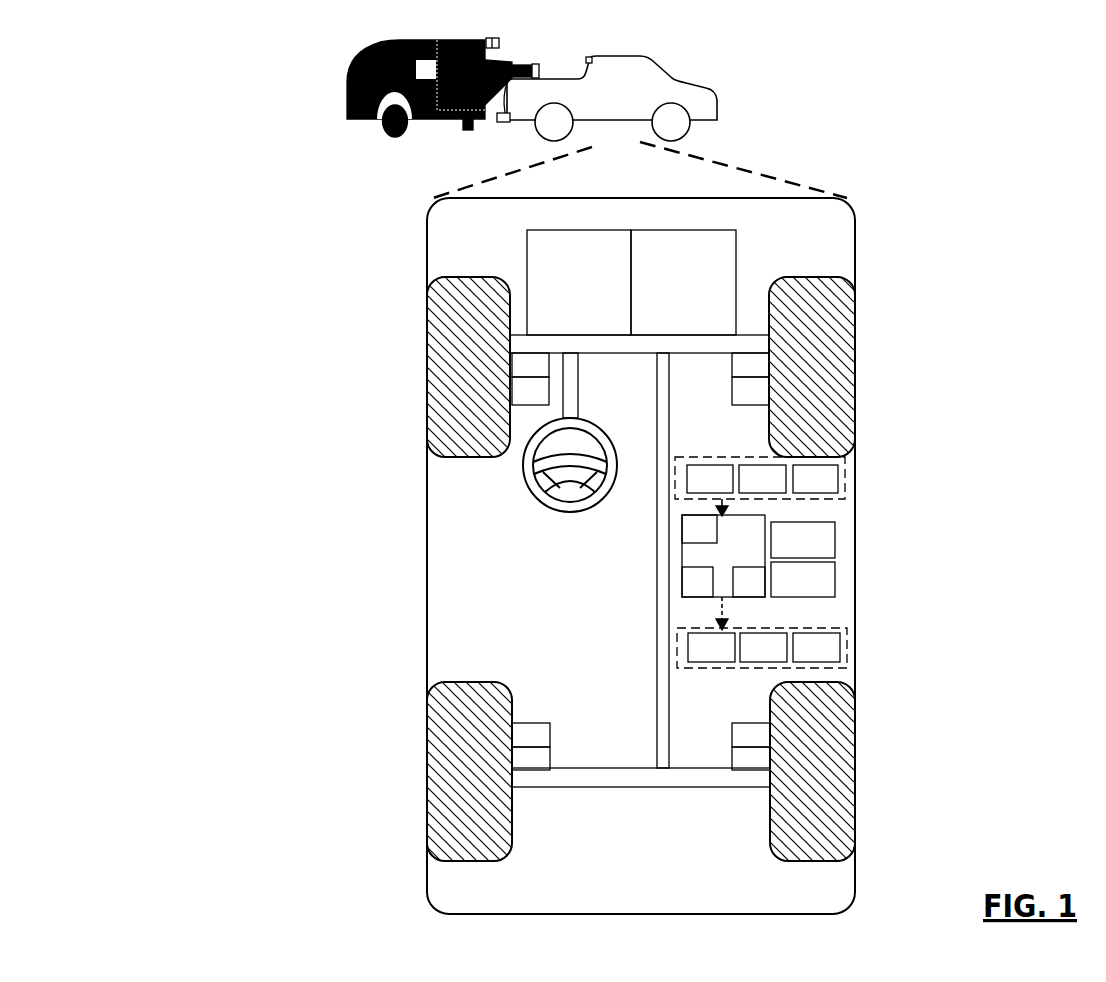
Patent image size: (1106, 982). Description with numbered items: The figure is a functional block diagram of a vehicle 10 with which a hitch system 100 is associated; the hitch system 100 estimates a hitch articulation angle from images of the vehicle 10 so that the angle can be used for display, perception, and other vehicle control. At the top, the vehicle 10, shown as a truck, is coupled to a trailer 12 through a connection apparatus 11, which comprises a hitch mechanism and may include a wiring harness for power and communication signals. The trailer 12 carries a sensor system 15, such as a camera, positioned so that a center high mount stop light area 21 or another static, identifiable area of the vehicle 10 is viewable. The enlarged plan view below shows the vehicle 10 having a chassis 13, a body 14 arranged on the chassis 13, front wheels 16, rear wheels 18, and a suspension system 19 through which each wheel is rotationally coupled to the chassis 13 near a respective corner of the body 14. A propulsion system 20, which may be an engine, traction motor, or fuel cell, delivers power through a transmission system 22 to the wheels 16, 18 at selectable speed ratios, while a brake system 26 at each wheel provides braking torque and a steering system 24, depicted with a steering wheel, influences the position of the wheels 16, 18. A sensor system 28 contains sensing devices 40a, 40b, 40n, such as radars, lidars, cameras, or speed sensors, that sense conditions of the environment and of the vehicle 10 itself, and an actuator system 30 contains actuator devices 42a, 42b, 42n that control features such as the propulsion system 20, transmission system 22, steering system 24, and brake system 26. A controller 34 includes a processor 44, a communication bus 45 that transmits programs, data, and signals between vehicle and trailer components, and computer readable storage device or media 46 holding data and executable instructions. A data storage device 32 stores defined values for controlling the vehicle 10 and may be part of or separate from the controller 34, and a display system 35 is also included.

The vehicle 10 is at (722, 105).
The connection apparatus 11 is at (531, 63).
The trailer 12 is at (347, 78).
The chassis 13 is at (640, 700).
The body 14 is at (427, 716).
The sensor system 15 is at (486, 40).
The front wheels 16 is at (797, 277).
The rear wheels 18 is at (485, 861).
The suspension system 19 is at (641, 561).
The propulsion system 20 is at (579, 282).
The center high mount stop light area 21 is at (589, 56).
The transmission system 22 is at (683, 282).
The steering system 24 is at (601, 376).
The brake system 26 is at (641, 562).
The sensor system 28 is at (760, 455).
The actuator system 30 is at (762, 669).
The data storage device 32 is at (803, 579).
The controller 34 is at (723, 556).
The display system 35 is at (803, 540).
The sensing device 40a is at (710, 479).
The sensing device 40b is at (762, 479).
The sensing device 40n is at (815, 479).
The actuator device 42a is at (711, 647).
The actuator device 42b is at (763, 647).
The actuator device 42n is at (816, 647).
The processor 44 is at (697, 582).
The communication bus 45 is at (699, 529).
The computer readable storage device or media 46 is at (749, 582).
The hitch system 100 is at (1002, 152).